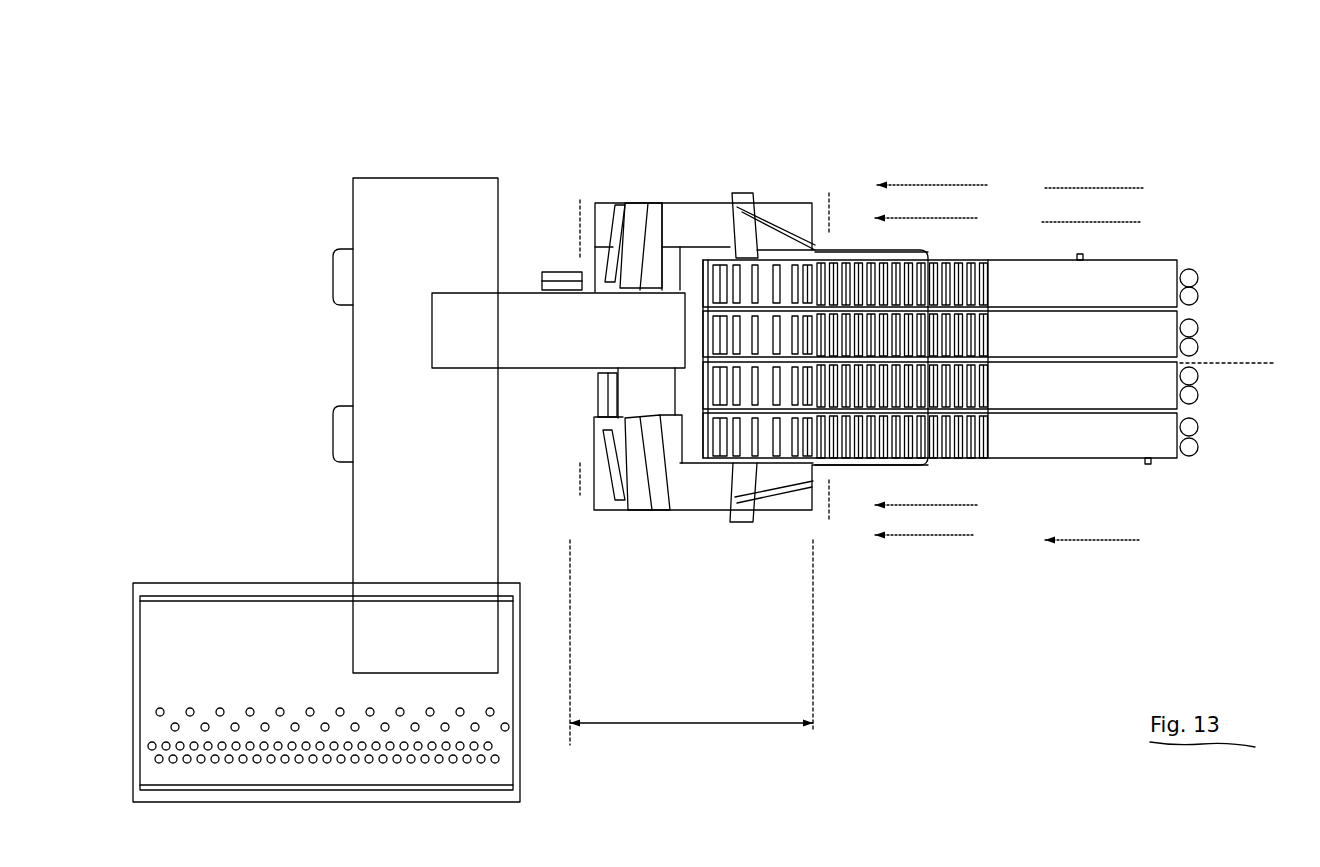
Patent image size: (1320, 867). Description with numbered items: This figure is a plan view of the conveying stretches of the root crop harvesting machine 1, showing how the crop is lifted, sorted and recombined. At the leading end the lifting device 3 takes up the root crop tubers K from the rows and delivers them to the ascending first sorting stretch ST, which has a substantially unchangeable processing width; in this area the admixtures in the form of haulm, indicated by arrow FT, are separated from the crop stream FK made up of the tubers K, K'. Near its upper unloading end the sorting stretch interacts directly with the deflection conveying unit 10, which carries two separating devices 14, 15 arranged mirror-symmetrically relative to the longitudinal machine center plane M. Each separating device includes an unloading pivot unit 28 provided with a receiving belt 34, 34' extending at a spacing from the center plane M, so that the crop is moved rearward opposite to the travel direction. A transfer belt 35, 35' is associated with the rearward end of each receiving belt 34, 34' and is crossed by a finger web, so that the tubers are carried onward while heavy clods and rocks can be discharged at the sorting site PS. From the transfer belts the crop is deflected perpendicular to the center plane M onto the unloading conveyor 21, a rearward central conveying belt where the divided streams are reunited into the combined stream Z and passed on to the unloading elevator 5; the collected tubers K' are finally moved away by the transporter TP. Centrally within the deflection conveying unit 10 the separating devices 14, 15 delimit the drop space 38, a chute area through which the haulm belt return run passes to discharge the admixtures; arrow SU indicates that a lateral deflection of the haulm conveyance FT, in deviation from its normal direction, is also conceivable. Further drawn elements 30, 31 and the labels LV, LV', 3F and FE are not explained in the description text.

The root crop harvesting machine 1 is at (323, 127).
The lifting device 3 is at (1192, 238).
The unloading elevator 5 is at (347, 531).
The deflection conveying unit 10 is at (683, 727).
The separating device 14 is at (670, 222).
The separating device 15 is at (652, 543).
The unloading conveyor 21 is at (454, 328).
The unloading pivot unit 28 is at (595, 263).
The housing 30 is at (817, 470).
The roller 31 is at (787, 220).
The receiving belt 34 is at (608, 501).
The receiving belt 34' is at (605, 205).
The transfer belt 35 is at (598, 484).
The transfer belt 35' is at (649, 168).
The drop space 38 is at (717, 202).
The tubers K' is at (569, 352).
The root crop tubers K is at (1232, 259).
The longitudinal machine center plane M is at (1273, 363).
The transporter TP is at (160, 612).
The sorting site PS is at (544, 220).
The longitudinal displacement LV is at (575, 436).
The longitudinal displacement LV' is at (575, 153).
The combined stream Z is at (578, 372).
The conveying direction 3F is at (645, 190).
The feed direction FE is at (705, 170).
The first sorting stretch ST is at (1187, 93).
The haulm conveying direction FT is at (920, 185).
The crop stream FK is at (948, 218).
The lateral deflection arrow SU is at (826, 541).